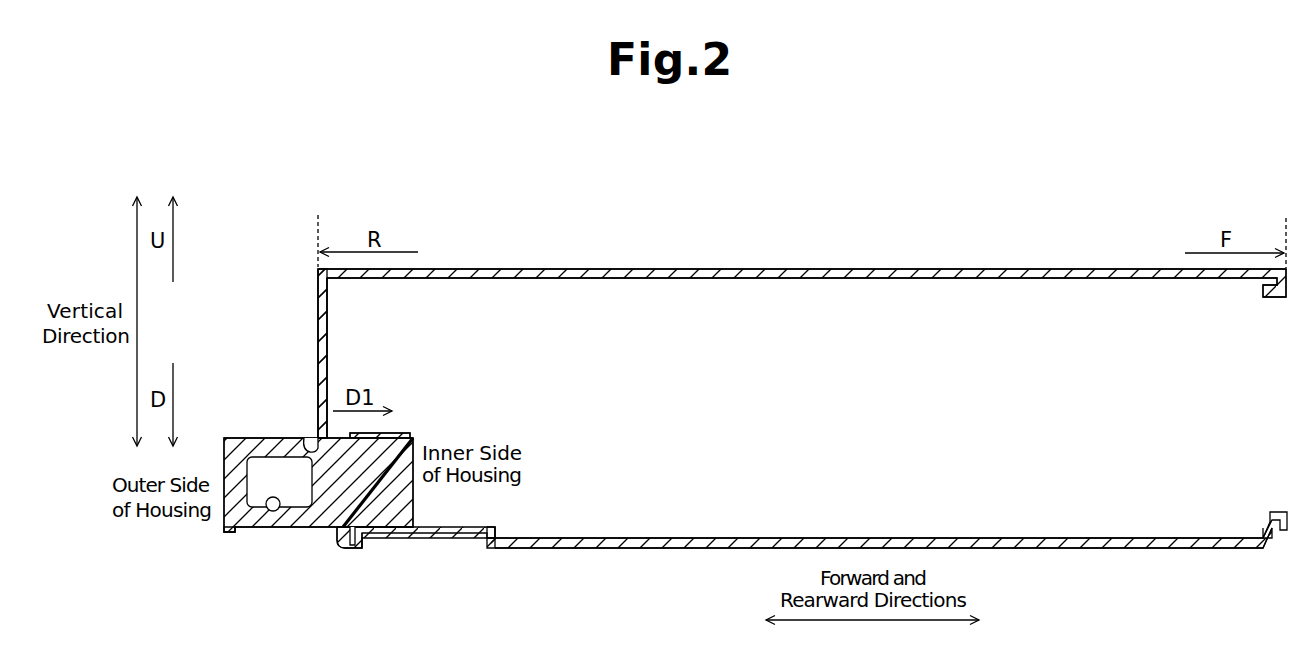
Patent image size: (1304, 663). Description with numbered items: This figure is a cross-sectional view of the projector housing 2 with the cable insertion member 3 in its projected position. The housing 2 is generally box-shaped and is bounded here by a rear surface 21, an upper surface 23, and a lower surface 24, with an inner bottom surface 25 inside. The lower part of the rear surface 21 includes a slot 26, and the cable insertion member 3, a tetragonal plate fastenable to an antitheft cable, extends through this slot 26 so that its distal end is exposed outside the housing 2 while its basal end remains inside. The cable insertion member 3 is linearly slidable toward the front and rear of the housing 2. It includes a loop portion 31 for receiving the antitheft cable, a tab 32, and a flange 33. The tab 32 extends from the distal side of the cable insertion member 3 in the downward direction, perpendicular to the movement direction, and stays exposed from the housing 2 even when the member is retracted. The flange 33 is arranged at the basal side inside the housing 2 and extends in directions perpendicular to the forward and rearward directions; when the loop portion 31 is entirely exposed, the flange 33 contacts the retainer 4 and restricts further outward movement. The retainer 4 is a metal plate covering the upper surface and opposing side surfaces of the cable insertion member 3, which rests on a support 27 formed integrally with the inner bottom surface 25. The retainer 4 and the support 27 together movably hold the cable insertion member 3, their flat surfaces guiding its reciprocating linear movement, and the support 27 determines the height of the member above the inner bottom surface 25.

The housing 2 is at (1288, 532).
The cable insertion member 3 is at (231, 438).
The retainer 4 is at (400, 432).
The rear surface 21 is at (318, 316).
The upper surface 23 is at (740, 268).
The lower surface 24 is at (517, 548).
The inner bottom surface 25 is at (568, 538).
The slot 26 is at (311, 442).
The support 27 is at (490, 526).
The loop portion 31 is at (273, 511).
The tab 32 is at (229, 537).
The flange 33 is at (416, 437).